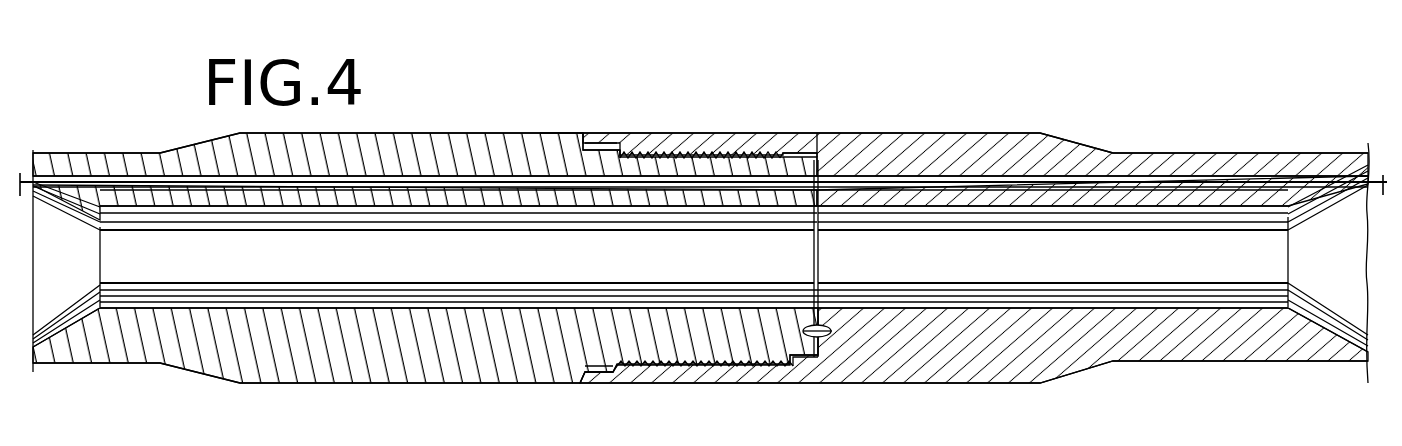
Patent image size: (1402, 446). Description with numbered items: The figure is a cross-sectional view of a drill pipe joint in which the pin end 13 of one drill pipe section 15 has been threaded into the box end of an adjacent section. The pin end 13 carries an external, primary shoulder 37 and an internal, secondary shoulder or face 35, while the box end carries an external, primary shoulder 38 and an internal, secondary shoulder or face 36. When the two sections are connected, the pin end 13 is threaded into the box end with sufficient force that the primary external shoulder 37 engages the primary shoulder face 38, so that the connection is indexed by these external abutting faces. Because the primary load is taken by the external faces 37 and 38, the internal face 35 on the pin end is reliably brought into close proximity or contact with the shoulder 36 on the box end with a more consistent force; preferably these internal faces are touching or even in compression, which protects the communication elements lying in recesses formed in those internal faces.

The pin end 13 is at (493, 132).
The section 15 is at (881, 133).
The internal secondary shoulder or face 35 is at (812, 156).
The internal secondary shoulder or face 36 is at (817, 170).
The external primary shoulder 37 is at (560, 131).
The external primary shoulder 38 is at (590, 134).